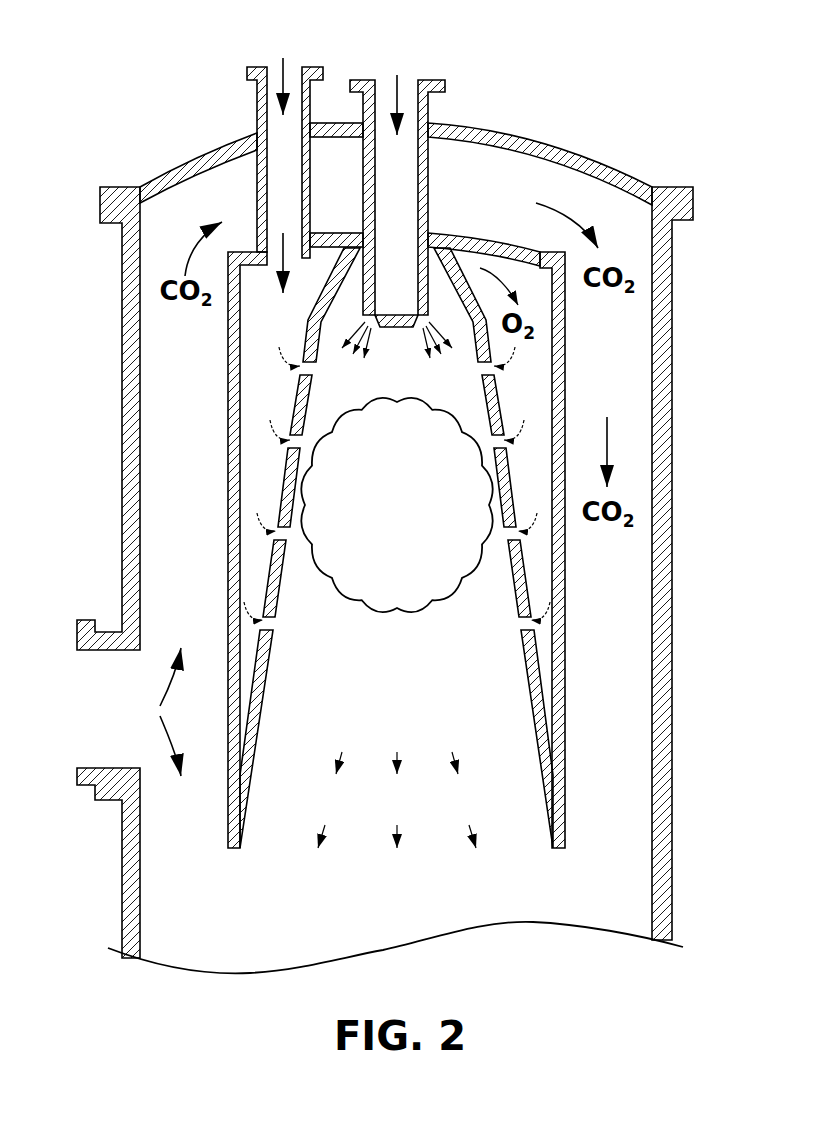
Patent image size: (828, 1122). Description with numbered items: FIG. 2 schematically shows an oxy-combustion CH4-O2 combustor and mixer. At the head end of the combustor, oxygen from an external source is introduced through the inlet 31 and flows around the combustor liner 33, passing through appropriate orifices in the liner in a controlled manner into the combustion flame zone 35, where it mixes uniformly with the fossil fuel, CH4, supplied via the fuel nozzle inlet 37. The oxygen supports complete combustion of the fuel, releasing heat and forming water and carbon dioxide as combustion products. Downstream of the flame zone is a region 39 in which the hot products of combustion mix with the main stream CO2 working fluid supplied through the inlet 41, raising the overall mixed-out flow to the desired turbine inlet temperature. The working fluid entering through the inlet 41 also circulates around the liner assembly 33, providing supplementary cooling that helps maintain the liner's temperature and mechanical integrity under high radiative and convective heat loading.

The inlet 31 is at (247, 71).
The combustor liner 33 is at (497, 402).
The combustion flame zone 35 is at (492, 548).
The fuel nozzle inlet 37 is at (445, 86).
The region 39 is at (524, 898).
The inlet 41 is at (103, 632).